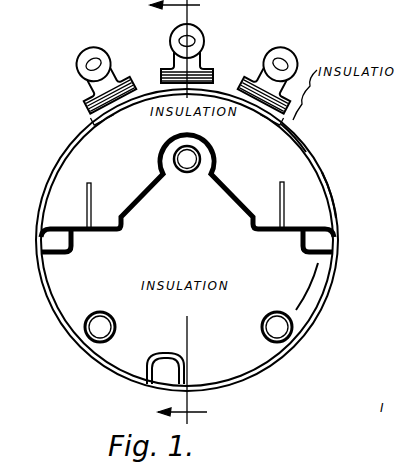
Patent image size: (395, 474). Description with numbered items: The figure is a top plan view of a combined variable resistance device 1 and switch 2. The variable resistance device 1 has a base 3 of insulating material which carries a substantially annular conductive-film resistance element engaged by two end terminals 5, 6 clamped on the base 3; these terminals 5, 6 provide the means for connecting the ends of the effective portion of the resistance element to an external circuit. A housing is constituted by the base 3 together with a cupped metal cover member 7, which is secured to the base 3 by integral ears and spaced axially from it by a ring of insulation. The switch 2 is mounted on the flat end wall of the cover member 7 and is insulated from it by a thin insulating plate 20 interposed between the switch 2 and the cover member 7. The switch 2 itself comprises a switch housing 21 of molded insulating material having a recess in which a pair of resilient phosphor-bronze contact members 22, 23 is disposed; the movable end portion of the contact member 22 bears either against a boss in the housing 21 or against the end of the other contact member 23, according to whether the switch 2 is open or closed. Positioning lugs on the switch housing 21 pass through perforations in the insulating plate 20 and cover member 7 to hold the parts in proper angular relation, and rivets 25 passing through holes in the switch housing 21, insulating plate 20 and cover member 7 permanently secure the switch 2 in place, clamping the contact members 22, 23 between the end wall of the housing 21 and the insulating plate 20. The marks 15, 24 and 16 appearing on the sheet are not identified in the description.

The variable resistance device 1 is at (317, 148).
The switch 2 is at (89, 362).
The base 3 is at (222, 74).
The end terminal 5 is at (107, 52).
The end terminal 6 is at (295, 54).
The cover member 7 is at (329, 190).
The center terminal 15 is at (207, 36).
The insulating plate 20 is at (284, 144).
The switch housing 21 is at (310, 287).
The contact member 22 is at (284, 204).
The contact member 23 is at (87, 191).
The rivets 25 is at (169, 150).
The element of adjacent figure 24 is at (316, 460).
The element of adjacent figure 16 is at (380, 466).